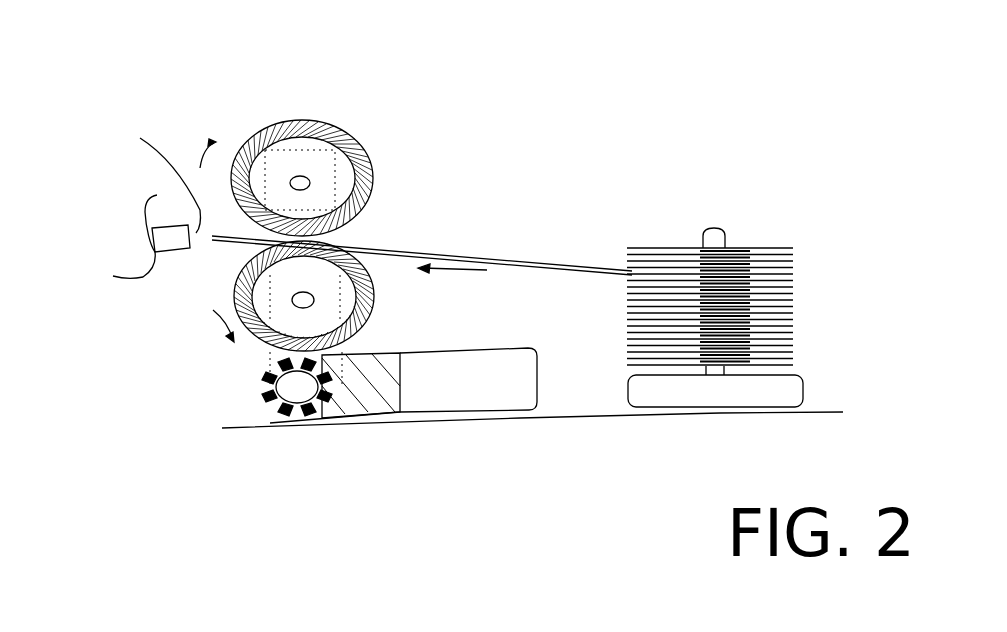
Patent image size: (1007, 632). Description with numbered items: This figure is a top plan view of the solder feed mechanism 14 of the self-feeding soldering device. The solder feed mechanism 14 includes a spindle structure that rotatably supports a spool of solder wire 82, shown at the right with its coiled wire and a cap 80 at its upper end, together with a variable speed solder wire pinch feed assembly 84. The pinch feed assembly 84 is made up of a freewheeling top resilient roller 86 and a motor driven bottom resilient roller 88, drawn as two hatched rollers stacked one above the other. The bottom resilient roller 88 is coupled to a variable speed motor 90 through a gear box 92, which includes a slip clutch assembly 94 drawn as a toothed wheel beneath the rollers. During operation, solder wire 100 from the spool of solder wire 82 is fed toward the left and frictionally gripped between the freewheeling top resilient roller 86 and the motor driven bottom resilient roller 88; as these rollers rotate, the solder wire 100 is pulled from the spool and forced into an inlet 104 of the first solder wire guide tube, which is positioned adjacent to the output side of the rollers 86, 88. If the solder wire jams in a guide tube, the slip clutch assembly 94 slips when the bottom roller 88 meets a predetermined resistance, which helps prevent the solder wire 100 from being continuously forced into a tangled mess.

The solder feed mechanism 14 is at (451, 183).
The spool cap 80 is at (710, 227).
The spool of solder wire 82 is at (812, 292).
The variable speed solder wire pinch feed assembly 84 is at (186, 120).
The freewheeling top resilient roller 86 is at (295, 120).
The motor driven bottom resilient roller 88 is at (233, 287).
The variable speed motor 90 is at (470, 385).
The gear box 92 is at (360, 424).
The slip clutch assembly 94 is at (263, 397).
The solder wire 100 is at (498, 255).
The inlet 104 is at (130, 195).